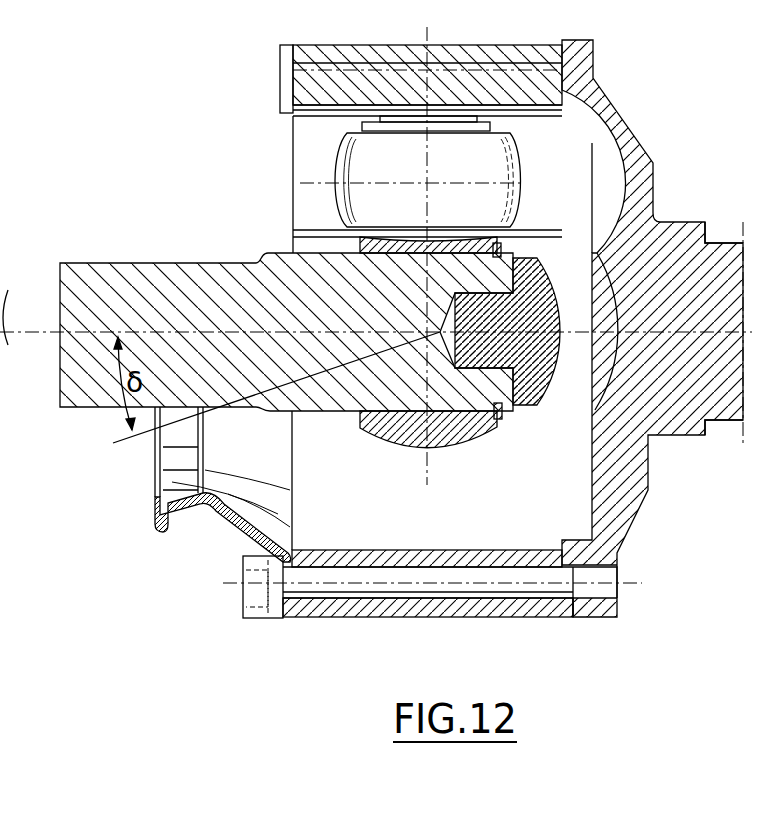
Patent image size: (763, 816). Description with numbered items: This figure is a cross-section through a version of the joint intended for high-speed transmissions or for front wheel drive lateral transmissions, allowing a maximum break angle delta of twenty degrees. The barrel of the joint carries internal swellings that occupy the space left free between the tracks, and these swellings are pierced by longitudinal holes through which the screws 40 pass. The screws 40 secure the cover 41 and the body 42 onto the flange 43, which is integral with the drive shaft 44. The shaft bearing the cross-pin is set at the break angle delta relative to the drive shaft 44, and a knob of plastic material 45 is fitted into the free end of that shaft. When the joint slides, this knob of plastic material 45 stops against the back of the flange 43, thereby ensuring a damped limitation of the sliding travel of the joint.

The screws 40 is at (318, 617).
The cover 41 is at (230, 530).
The body 42 is at (375, 620).
The flange 43 is at (630, 532).
The drive shaft 44 is at (730, 418).
The knob of plastic material 45 is at (555, 405).